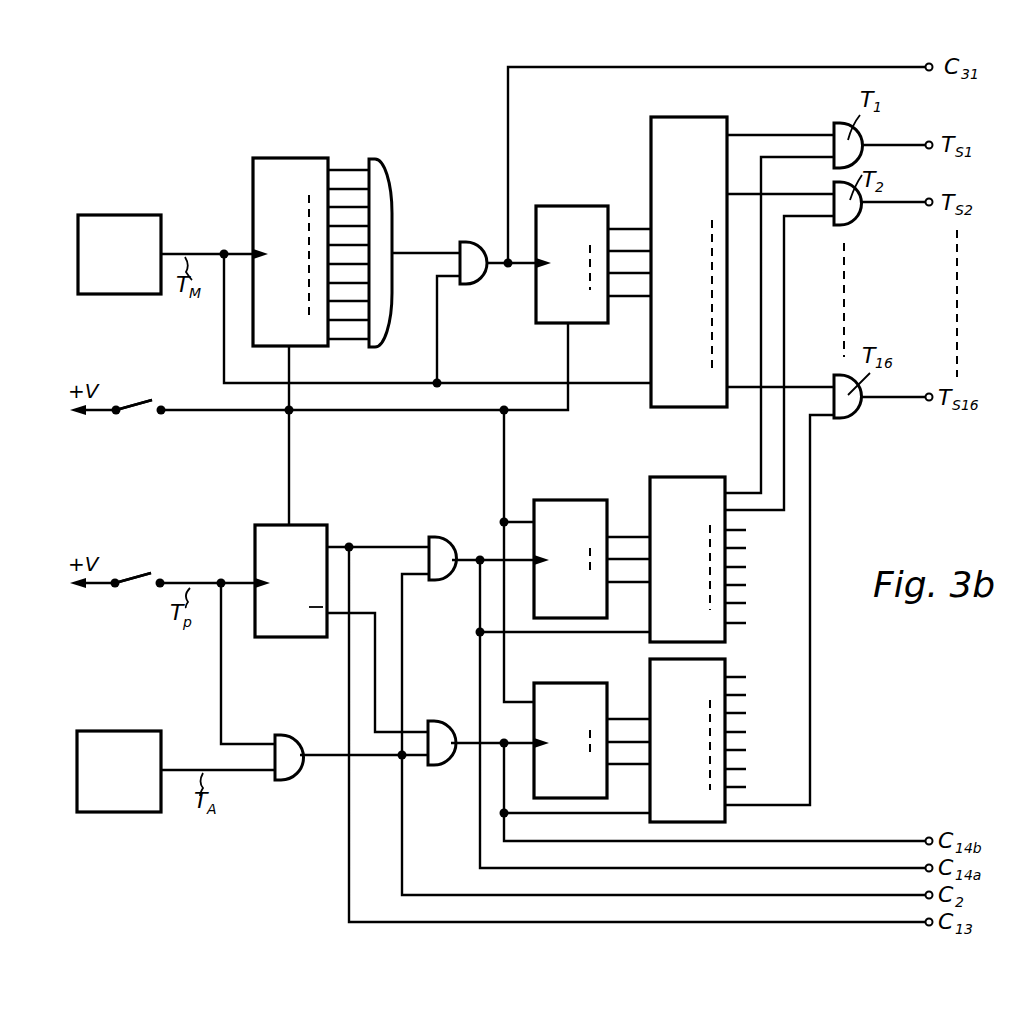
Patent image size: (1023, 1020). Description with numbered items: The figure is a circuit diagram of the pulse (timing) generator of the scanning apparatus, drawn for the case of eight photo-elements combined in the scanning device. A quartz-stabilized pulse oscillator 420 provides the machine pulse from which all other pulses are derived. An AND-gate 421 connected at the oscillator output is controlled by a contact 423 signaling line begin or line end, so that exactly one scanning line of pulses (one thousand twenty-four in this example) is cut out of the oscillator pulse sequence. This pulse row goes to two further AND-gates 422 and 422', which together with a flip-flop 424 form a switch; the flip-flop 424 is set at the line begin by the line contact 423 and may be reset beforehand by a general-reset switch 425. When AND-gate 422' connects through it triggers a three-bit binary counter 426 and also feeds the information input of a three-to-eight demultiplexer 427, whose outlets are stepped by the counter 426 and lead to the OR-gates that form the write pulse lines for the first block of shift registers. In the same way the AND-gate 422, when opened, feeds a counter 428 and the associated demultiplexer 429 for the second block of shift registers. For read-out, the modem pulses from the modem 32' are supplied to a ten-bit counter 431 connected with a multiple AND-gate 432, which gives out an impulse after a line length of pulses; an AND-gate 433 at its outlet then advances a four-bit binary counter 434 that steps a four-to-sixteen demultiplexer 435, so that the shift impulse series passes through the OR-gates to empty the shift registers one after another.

The modem 32' is at (119, 226).
The 10-bit counter 431 is at (263, 182).
The multiple AND-gate 432 is at (382, 323).
The AND-gate 433 is at (473, 257).
The 4 bit-binary counter 434 is at (553, 222).
The 4 to 16 multiplexer 435 is at (660, 138).
The switch 425 is at (135, 404).
The contact 423 is at (132, 575).
The flip-flop 424 is at (305, 535).
The pulse oscillator 420 is at (120, 738).
The AND-gate 421 is at (290, 745).
The AND-gate 422 is at (439, 724).
The AND-gate 422' is at (427, 536).
The counter 426 is at (562, 517).
The 3 to 8-demultiplexer 427 is at (675, 495).
The counter 428 is at (558, 700).
The demultiplexer 429 is at (718, 668).